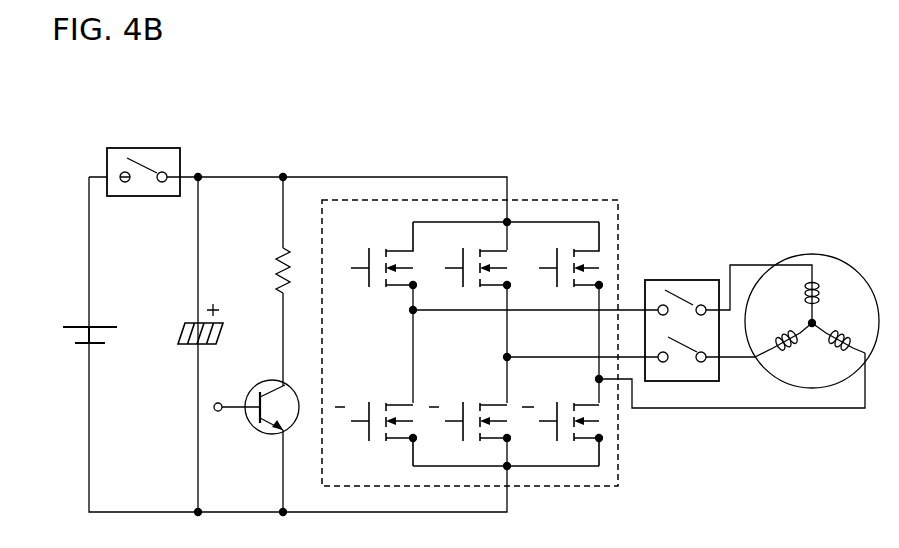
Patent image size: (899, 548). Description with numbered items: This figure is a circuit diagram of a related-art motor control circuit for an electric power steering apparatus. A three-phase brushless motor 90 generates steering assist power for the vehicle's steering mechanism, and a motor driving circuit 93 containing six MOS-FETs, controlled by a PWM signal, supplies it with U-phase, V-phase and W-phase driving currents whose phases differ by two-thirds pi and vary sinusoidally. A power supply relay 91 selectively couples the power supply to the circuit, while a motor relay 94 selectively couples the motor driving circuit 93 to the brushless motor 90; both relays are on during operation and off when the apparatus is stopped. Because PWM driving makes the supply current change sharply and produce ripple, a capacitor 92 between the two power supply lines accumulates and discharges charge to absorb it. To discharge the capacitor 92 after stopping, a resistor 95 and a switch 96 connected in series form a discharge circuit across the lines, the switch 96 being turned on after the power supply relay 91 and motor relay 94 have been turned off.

The three-phase brushless motor 90 is at (812, 254).
The power supply relay 91 is at (140, 148).
The capacitor 92 is at (188, 323).
The motor driving circuit 93 is at (562, 200).
The motor relay 94 is at (683, 280).
The resistor 95 is at (280, 254).
The switch 96 is at (260, 433).